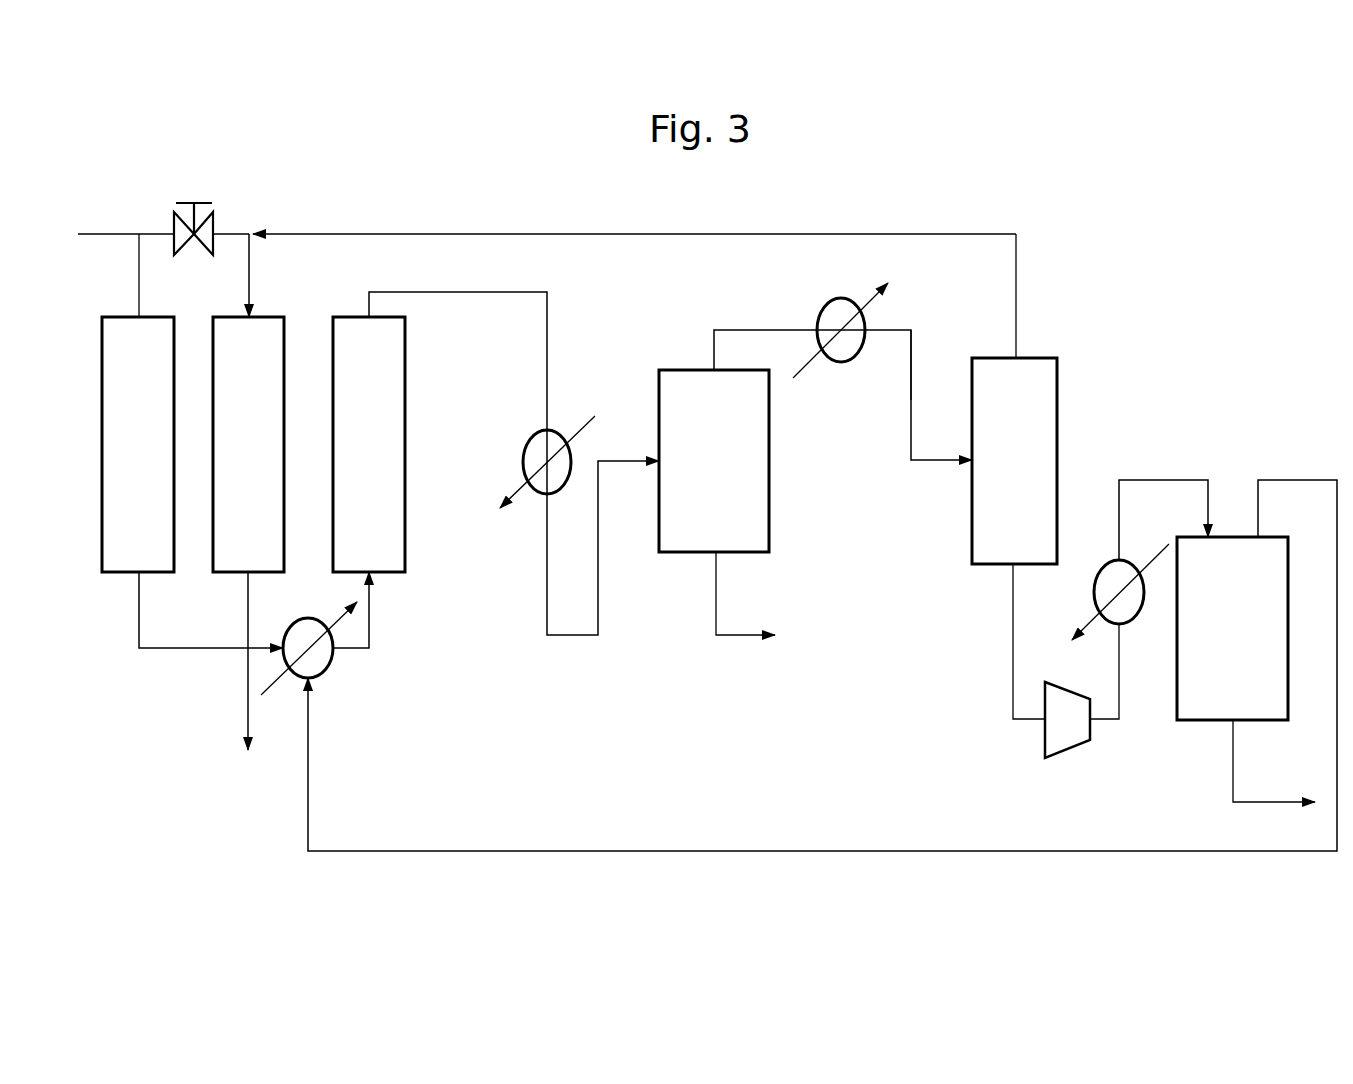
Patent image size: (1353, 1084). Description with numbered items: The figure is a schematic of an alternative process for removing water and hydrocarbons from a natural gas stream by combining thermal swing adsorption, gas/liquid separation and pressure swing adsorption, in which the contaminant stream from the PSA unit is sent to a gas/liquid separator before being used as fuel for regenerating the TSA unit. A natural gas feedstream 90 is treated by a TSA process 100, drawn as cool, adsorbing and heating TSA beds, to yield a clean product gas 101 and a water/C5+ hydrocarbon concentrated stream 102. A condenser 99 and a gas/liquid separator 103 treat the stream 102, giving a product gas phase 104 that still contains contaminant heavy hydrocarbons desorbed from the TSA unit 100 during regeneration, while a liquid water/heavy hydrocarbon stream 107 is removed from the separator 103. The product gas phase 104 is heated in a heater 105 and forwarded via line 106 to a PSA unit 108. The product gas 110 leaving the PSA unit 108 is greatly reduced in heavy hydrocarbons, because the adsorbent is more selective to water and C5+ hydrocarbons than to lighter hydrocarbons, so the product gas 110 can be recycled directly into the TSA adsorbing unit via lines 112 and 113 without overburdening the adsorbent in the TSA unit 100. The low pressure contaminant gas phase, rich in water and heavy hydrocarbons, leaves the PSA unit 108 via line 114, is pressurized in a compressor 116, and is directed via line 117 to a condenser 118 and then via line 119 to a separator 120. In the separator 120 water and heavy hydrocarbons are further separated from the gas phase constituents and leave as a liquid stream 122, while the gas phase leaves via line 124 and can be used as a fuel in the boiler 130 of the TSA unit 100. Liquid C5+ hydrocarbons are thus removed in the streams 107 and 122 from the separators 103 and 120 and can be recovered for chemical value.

The natural gas feedstream 90 is at (100, 233).
The line 112 is at (356, 233).
The line 113 is at (248, 283).
The TSA process 100 is at (294, 306).
The clean product gas 101 is at (247, 712).
The boiler 130 is at (318, 672).
The condenser 99 is at (523, 450).
The water/C5+ hydrocarbon concentrated stream 102 is at (461, 291).
The gas/liquid separator 103 is at (683, 369).
The product gas phase 104 is at (740, 329).
The heater 105 is at (819, 312).
The line 106 is at (912, 344).
The liquid water/heavy hydrocarbon stream 107 is at (715, 602).
The product gas 110 is at (1017, 290).
The PSA unit 108 is at (971, 534).
The line 114 is at (1012, 650).
The compressor 116 is at (1071, 749).
The line 117 is at (1118, 670).
The condenser 118 is at (1093, 594).
The line 119 is at (1167, 479).
The separator 120 is at (1200, 722).
The liquid stream 122 is at (1276, 801).
The line 124 is at (1299, 479).